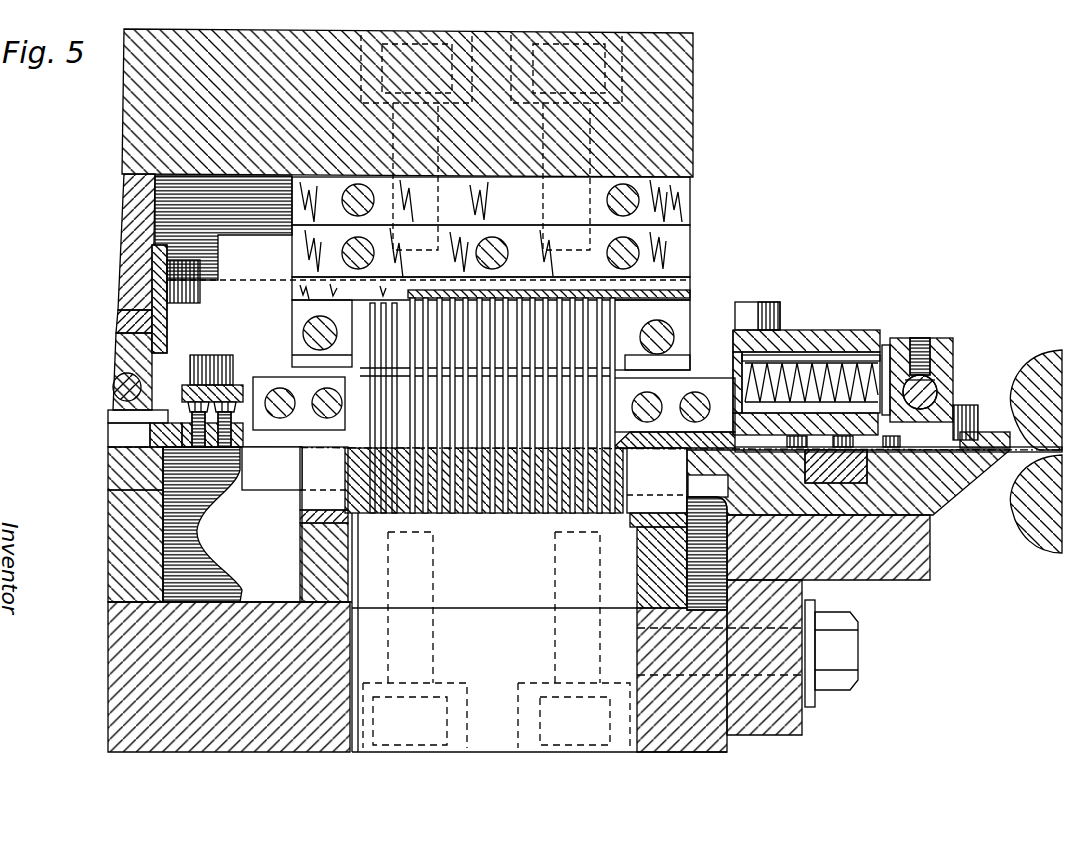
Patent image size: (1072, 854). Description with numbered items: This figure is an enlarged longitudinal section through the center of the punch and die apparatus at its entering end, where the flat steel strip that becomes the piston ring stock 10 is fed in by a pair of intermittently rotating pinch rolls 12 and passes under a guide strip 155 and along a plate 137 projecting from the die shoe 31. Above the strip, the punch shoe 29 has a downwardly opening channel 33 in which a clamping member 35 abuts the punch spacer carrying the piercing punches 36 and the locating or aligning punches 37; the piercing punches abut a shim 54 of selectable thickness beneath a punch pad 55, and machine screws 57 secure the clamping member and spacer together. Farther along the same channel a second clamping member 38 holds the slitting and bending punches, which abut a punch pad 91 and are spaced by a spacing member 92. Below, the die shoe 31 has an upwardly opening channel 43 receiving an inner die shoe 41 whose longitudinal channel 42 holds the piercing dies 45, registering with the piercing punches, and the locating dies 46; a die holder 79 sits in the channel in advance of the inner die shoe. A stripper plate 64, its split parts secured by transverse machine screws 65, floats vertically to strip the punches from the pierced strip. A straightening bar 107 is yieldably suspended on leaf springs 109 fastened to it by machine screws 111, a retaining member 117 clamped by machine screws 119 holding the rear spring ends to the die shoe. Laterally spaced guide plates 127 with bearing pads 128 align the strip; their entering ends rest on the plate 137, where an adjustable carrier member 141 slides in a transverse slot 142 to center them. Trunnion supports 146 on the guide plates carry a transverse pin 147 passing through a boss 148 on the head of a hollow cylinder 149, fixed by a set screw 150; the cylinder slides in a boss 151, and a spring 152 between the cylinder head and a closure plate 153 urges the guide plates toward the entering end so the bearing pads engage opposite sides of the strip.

The punch shoe 29 is at (683, 90).
The channel 33 is at (692, 185).
The machine screws 57 is at (642, 250).
The punch pad 55 is at (693, 280).
The shim 54 is at (691, 294).
The clamping member 35 is at (680, 323).
The closure plate 153 is at (735, 352).
The piercing punches 36 is at (447, 295).
The locating or aligning punches 37 is at (390, 340).
The clamping member 38 is at (130, 260).
The punch pad 91 is at (120, 319).
The spacing member 92 is at (118, 349).
The straightening bar 107 is at (171, 418).
The machine screws 119 is at (214, 356).
The machine screws 111 is at (232, 392).
The retaining member 117 is at (246, 405).
The machine screws 65 is at (709, 380).
The stripper plate 64 is at (688, 378).
The leaf springs 109 is at (256, 449).
The guide plates 127 is at (693, 449).
The channel 42 is at (310, 502).
The inner die shoe 41 is at (312, 540).
The channel 43 is at (253, 603).
The die holder 79 is at (118, 528).
The die shoe 31 is at (118, 675).
The locating dies 46 is at (397, 514).
The piercing dies 45 is at (520, 514).
The bearing pads 128 is at (758, 465).
The plate 137 is at (952, 500).
The carrier member 141 is at (852, 470).
The transverse slot 142 is at (828, 482).
The boss 151 is at (788, 332).
The spring 152 is at (826, 358).
The hollow cylinder 149 is at (887, 352).
The set screw 150 is at (918, 337).
The boss 148 is at (940, 343).
The transverse pin 147 is at (933, 373).
The trunnion supports 146 is at (953, 372).
The guide strip 155 is at (983, 430).
The piston ring stock 10 is at (1020, 447).
The pinch rolls 12 is at (1040, 352).